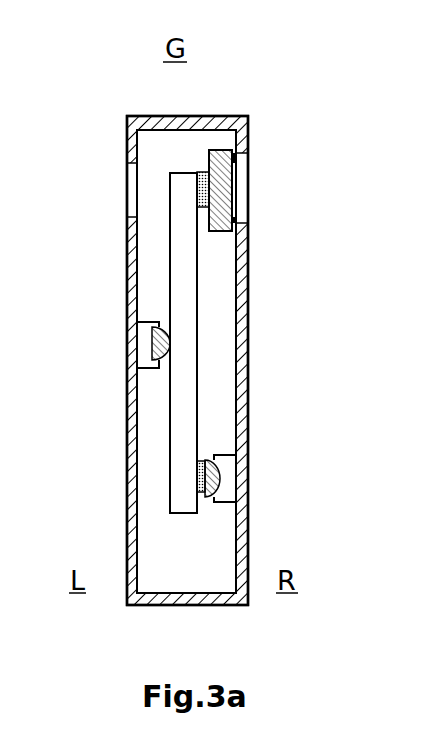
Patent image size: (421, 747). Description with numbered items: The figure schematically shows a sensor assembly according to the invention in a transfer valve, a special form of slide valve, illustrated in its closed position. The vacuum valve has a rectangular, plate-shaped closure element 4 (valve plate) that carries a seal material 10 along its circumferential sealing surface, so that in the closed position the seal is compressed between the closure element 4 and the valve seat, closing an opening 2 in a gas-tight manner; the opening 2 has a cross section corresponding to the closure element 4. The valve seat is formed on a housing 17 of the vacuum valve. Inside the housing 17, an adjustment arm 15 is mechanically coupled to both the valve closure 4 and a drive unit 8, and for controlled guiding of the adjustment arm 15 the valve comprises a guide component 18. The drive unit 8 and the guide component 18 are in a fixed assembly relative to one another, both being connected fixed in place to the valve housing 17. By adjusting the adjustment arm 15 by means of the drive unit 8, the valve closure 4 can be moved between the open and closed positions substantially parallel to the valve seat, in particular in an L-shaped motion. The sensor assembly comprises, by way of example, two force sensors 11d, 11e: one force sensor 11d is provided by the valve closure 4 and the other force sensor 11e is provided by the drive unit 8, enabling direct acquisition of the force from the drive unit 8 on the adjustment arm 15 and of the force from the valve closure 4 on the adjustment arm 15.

The opening 2 is at (183, 360).
The closure element 4 is at (272, 190).
The drive unit 8 is at (262, 470).
The seal material 10 is at (286, 214).
The force sensor 11d is at (116, 205).
The force sensor 11e is at (114, 430).
The adjustment arm 15 is at (254, 343).
The housing 17 is at (135, 360).
The guide component 18 is at (96, 323).